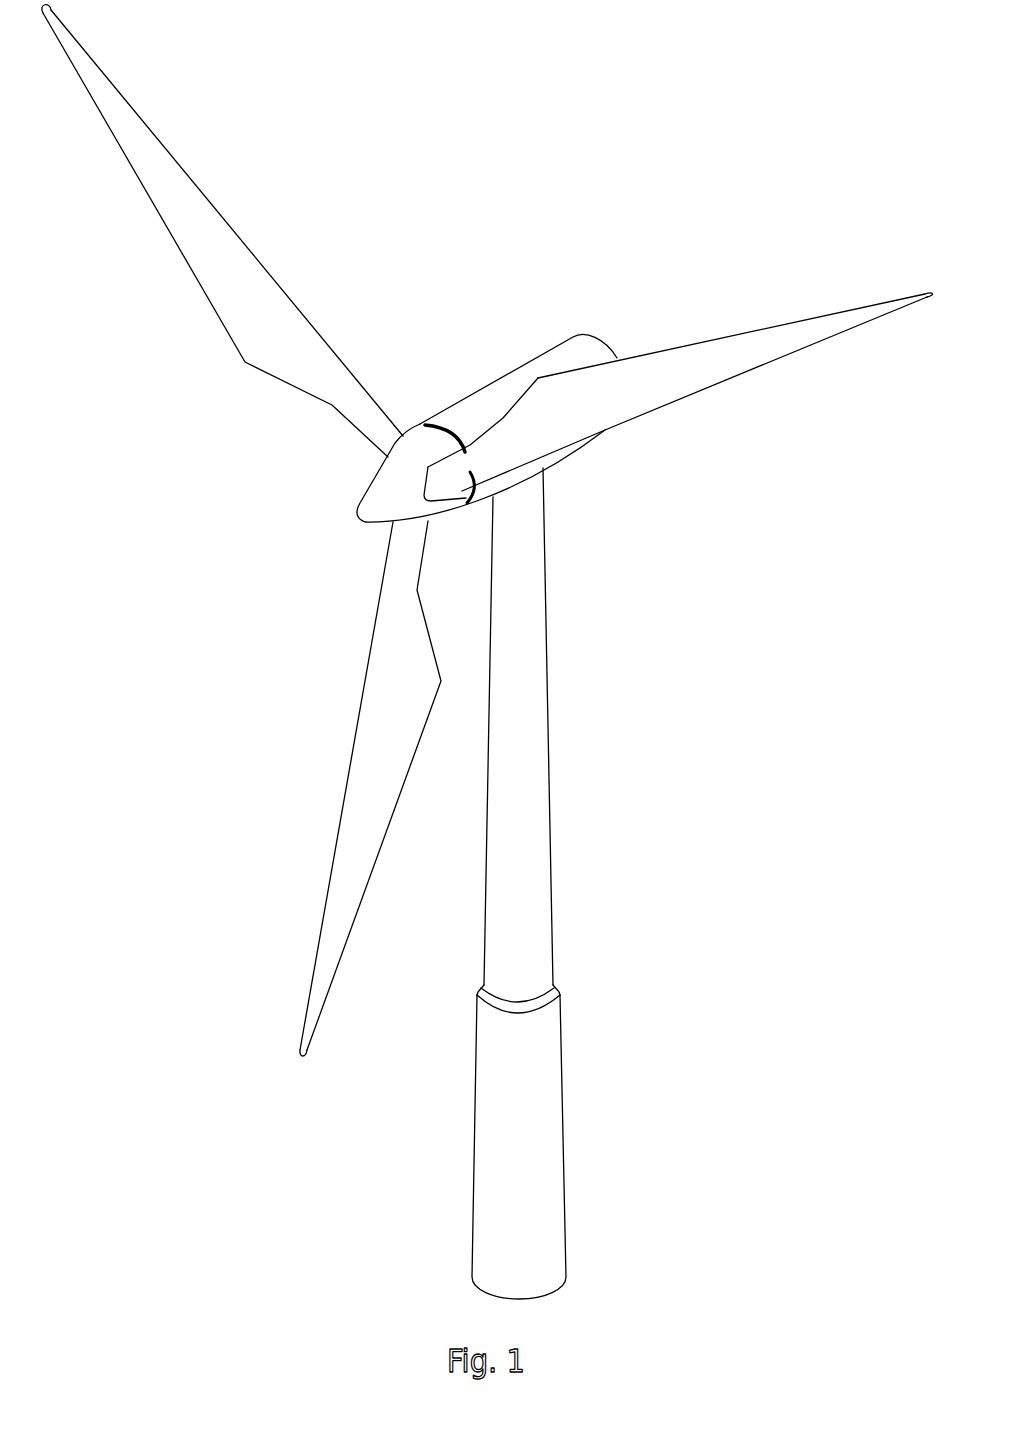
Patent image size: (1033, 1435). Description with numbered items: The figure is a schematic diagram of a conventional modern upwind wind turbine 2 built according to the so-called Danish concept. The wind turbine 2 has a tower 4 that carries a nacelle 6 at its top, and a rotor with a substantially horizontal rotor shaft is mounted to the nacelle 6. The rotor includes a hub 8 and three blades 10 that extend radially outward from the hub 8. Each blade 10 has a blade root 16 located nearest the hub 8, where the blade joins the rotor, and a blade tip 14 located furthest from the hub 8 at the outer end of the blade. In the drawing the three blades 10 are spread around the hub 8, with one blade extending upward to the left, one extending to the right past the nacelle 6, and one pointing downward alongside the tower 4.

The wind turbine 2 is at (676, 803).
The tower 4 is at (538, 729).
The nacelle 6 is at (480, 402).
The hub 8 is at (380, 497).
The blade 10 is at (259, 333).
The blade tip 14 is at (88, 68).
The blade root 16 is at (389, 445).